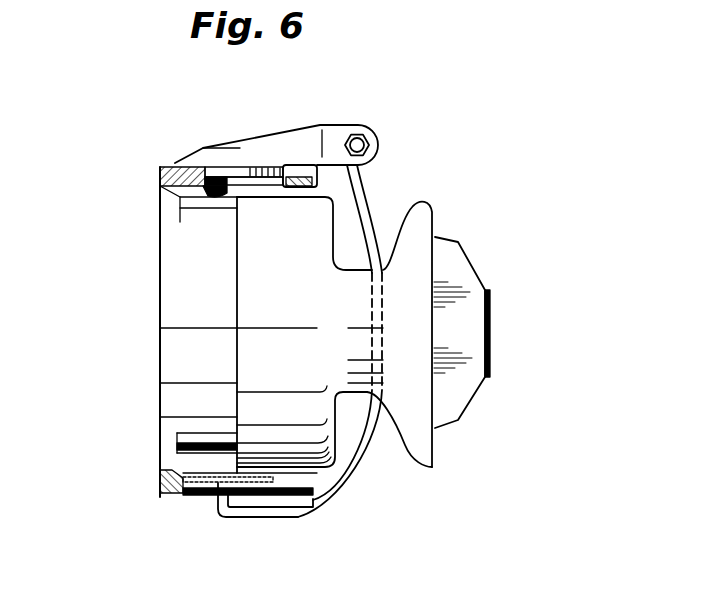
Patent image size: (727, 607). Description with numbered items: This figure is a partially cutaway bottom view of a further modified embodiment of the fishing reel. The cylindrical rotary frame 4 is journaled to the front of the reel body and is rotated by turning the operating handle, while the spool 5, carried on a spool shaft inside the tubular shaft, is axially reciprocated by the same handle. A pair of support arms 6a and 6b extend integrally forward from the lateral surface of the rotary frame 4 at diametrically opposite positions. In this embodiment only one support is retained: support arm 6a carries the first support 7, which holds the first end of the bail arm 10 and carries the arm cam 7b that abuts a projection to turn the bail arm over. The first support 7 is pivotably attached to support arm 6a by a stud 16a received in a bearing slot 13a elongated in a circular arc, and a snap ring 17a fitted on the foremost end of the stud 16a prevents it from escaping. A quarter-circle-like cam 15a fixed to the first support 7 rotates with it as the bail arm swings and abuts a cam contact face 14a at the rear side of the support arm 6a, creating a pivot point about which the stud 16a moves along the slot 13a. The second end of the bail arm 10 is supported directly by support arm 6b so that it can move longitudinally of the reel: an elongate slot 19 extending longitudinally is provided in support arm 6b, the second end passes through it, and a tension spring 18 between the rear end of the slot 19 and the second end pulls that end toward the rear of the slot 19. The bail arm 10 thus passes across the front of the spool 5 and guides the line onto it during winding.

The rotary frame 4 is at (170, 373).
The spool 5 is at (433, 213).
The support arm 6a is at (175, 163).
The support arm 6b is at (160, 493).
The first support 7 is at (303, 128).
The arm cam 7b is at (280, 150).
The bail arm 10 is at (365, 203).
The bearing slot 13a is at (260, 167).
The cam contact face 14a is at (210, 166).
The cam 15a is at (240, 172).
The stud 16a is at (215, 190).
The snap ring 17a is at (203, 192).
The tension spring 18 is at (192, 497).
The elongate slot 19 is at (250, 505).